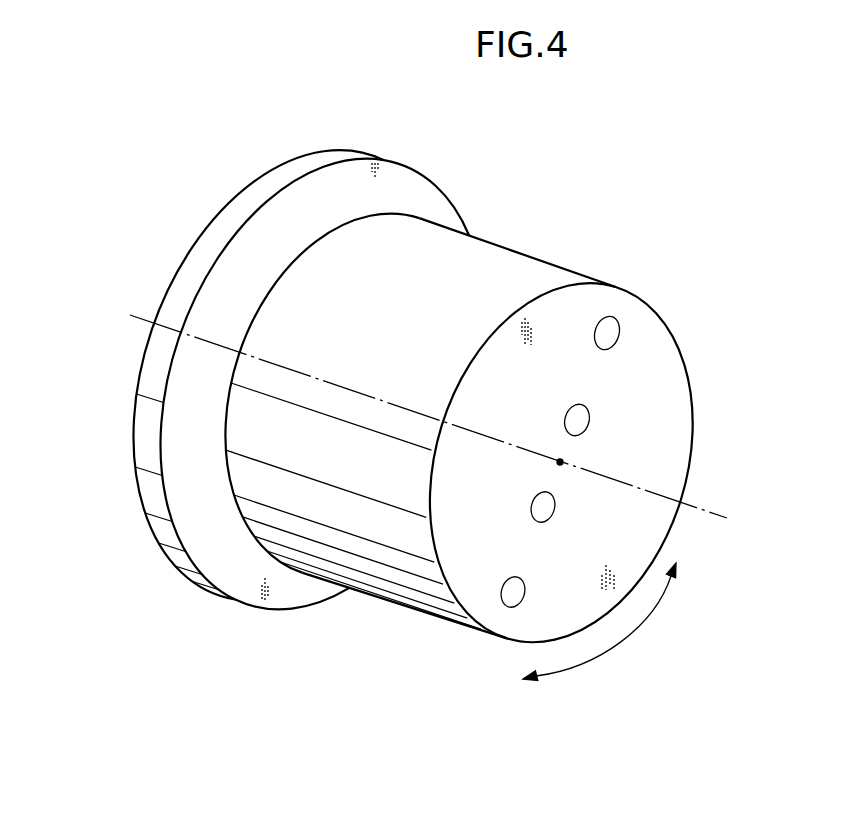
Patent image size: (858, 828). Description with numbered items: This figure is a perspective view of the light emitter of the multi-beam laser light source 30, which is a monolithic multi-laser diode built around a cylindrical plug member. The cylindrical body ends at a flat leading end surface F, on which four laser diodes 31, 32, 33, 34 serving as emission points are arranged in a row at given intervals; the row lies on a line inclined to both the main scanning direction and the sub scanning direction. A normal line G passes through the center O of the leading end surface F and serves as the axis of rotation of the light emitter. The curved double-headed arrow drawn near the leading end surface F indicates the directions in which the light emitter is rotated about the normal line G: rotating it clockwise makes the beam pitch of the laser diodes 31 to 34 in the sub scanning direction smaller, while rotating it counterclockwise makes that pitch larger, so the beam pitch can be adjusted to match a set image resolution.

The laser light source 30 is at (645, 211).
The laser diode 31 is at (610, 338).
The laser diode 32 is at (580, 421).
The laser diode 33 is at (545, 507).
The laser diode 34 is at (518, 592).
The center O is at (562, 461).
The normal line G is at (441, 426).
The leading end surface F is at (512, 628).